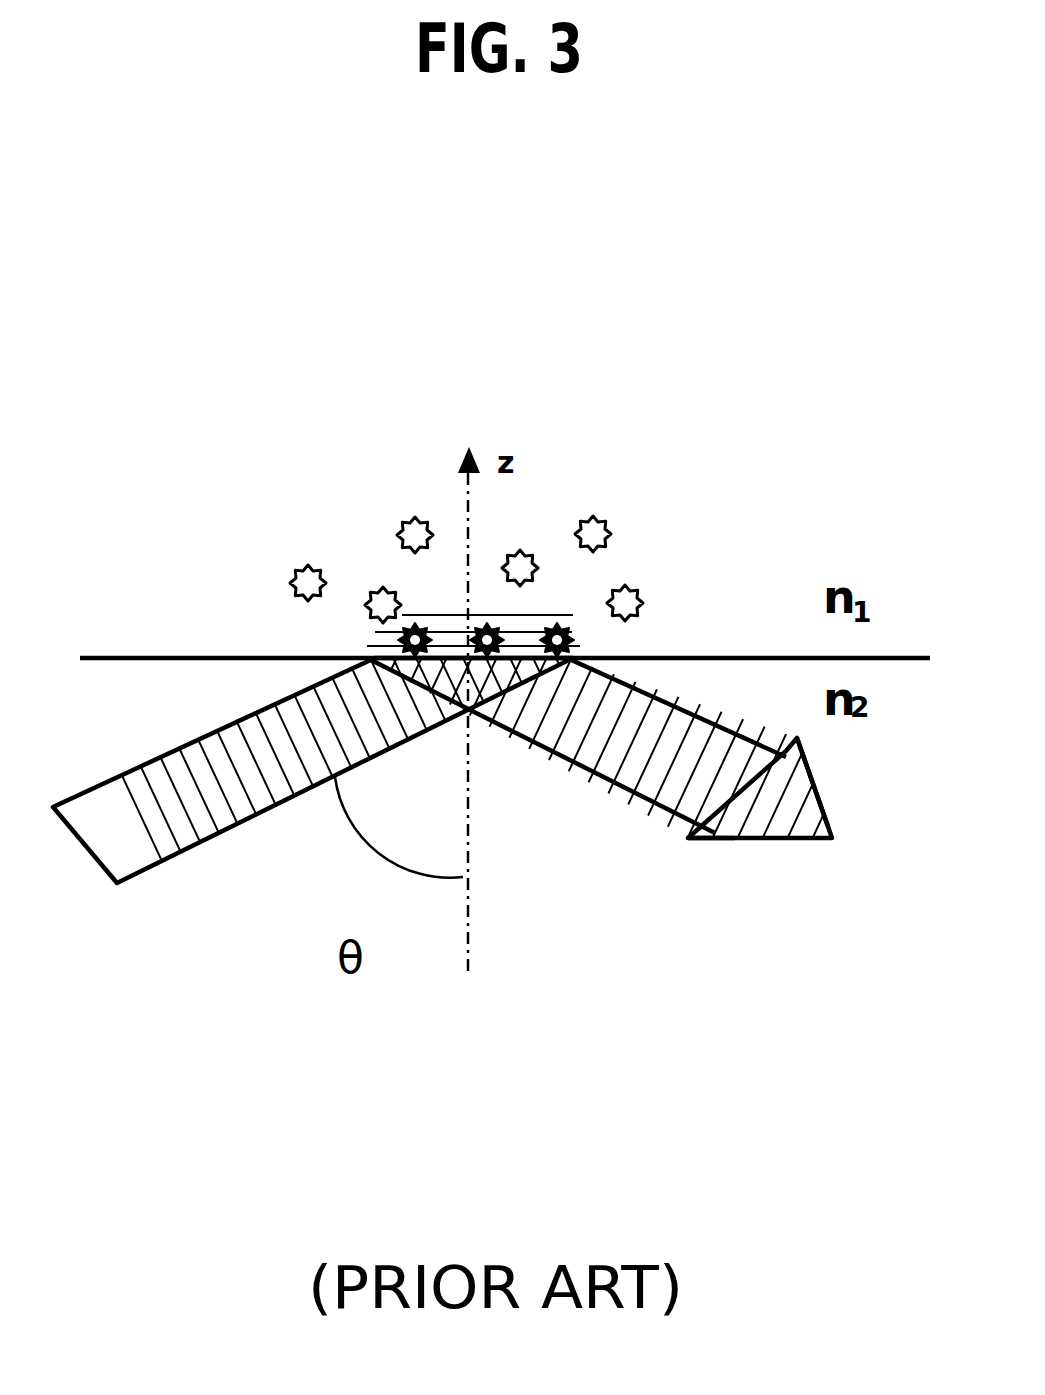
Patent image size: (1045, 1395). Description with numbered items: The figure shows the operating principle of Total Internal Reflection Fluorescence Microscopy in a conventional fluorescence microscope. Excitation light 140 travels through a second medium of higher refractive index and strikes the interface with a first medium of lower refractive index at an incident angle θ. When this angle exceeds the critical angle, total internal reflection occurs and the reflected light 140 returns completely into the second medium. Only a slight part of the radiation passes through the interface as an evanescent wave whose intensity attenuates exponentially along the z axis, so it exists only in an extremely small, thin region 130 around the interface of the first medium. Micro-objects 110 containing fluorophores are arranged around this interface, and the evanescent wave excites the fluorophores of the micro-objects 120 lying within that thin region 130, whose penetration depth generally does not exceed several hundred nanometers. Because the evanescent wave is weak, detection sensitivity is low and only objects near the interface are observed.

The micro-objects 110 is at (599, 518).
The micro-objects existing around the interface 120 is at (413, 603).
The thin region around the interface 130 is at (520, 628).
The excitation light 140 is at (622, 768).